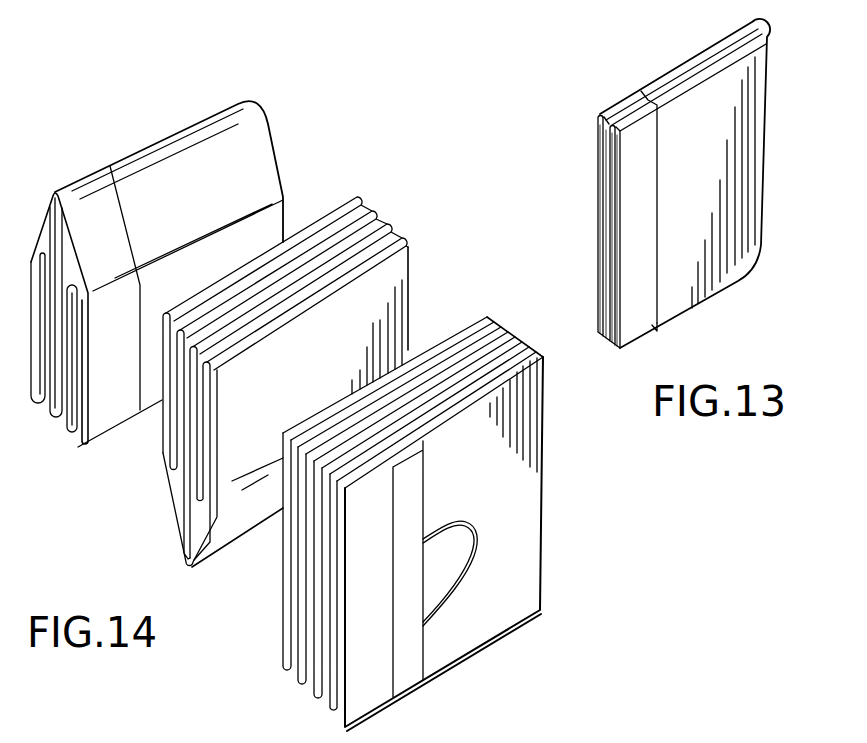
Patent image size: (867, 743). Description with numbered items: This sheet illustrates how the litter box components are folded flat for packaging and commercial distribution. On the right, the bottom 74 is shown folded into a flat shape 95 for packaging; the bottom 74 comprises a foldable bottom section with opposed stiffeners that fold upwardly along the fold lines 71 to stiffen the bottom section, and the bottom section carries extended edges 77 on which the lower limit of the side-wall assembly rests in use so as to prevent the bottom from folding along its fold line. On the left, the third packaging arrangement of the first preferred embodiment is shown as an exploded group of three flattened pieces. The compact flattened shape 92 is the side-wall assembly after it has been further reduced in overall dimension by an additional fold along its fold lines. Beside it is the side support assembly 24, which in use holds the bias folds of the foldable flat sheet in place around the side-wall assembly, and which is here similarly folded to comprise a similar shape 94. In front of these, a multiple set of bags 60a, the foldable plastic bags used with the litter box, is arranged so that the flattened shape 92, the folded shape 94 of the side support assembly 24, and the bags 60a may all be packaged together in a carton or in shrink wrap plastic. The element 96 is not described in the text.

In FIG. 14, the flattened shape 92 is at (153, 146).
In FIG. 14, the shape 94 is at (315, 338).
In FIG. 14, the side support assembly 24 is at (412, 273).
In FIG. 14, the accordion file with pull tab 96 is at (425, 484).
In FIG. 14, the foldable plastic bag 60a is at (543, 378).
In FIG. 13, the flat shape 95 is at (682, 181).
In FIG. 13, the fold lines 71 is at (658, 153).
In FIG. 13, the bottom 74 is at (703, 151).
In FIG. 13, the extended edges 77 is at (688, 312).